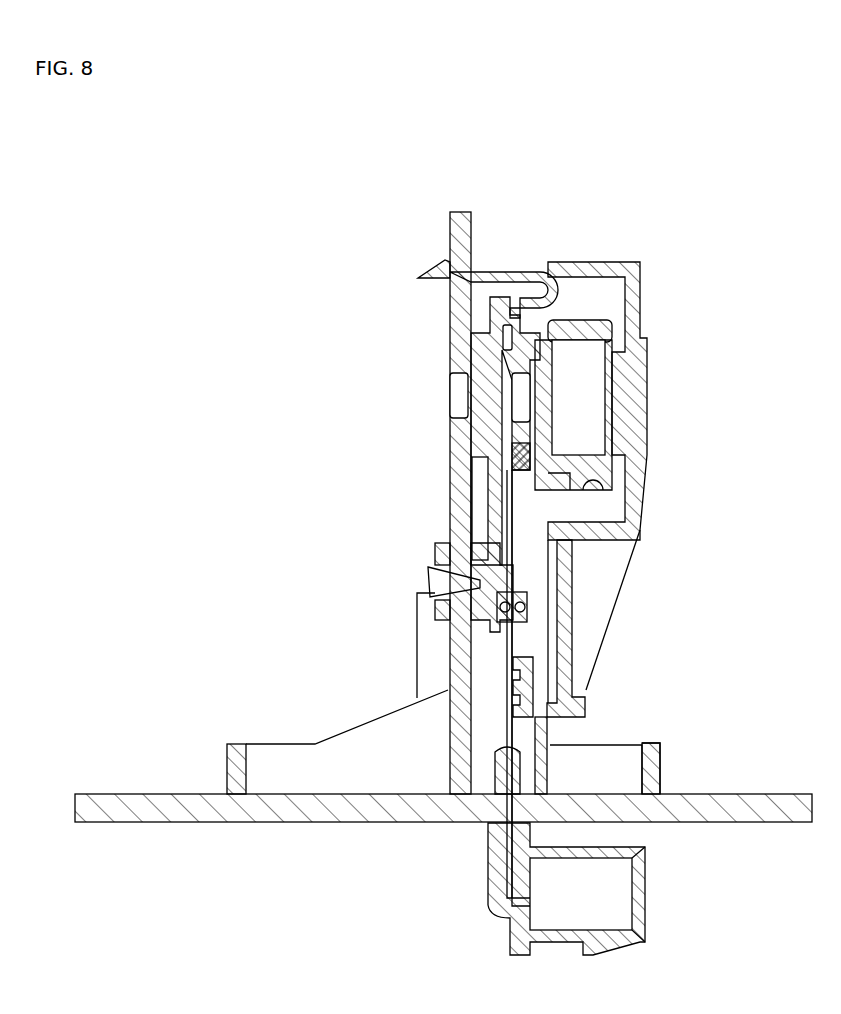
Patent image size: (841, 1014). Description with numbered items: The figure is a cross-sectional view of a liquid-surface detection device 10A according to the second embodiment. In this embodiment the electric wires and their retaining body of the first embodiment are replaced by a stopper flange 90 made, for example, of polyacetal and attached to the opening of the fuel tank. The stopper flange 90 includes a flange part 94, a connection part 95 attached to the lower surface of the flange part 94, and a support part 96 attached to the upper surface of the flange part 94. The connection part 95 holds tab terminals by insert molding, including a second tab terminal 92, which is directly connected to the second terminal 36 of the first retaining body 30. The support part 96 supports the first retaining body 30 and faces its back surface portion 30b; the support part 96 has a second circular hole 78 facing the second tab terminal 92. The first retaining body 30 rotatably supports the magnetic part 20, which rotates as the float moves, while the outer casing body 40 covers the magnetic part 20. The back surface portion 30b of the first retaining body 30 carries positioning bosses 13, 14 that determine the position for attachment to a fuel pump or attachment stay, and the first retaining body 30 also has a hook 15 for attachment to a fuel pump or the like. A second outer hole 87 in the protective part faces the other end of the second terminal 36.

The liquid-surface detection device 10A is at (240, 285).
The positioning boss 13 is at (450, 378).
The positioning boss 14 is at (438, 572).
The hook 15 is at (432, 268).
The magnetic part 20 is at (570, 318).
The first retaining body 30 is at (495, 265).
The back surface portion 30b is at (485, 490).
The second terminal 36 is at (518, 605).
The outer casing body 40 is at (645, 265).
The second circular hole 78 is at (455, 648).
The second outer hole 87 is at (567, 650).
The stopper flange 90 is at (232, 726).
The second tab terminal 92 is at (503, 646).
The flange part 94 is at (130, 792).
The connection part 95 is at (648, 890).
The support part 96 is at (465, 210).